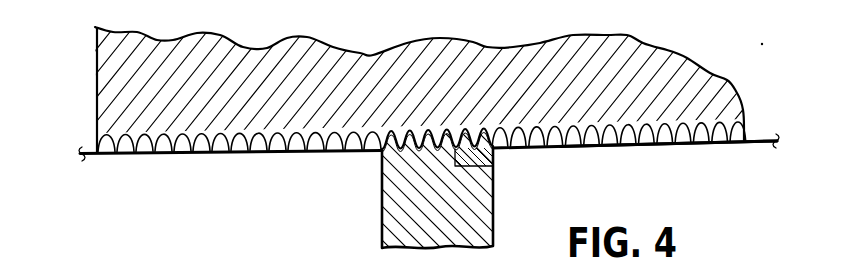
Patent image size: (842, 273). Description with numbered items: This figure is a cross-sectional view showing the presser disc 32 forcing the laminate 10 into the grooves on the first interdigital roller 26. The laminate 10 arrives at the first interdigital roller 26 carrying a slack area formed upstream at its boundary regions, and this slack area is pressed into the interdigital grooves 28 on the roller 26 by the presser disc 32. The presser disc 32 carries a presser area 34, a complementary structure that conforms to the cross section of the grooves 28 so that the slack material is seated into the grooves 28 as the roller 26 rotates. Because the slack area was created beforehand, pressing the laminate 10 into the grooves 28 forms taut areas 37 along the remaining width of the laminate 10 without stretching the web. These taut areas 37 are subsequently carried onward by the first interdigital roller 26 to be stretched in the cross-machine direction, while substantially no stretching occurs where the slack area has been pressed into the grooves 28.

The laminate 10 is at (138, 161).
The first interdigital roller 26 is at (484, 50).
The interdigital grooves 28 is at (665, 112).
The presser disc 32 is at (390, 208).
The presser area 34 is at (454, 170).
The taut areas 37 is at (649, 148).